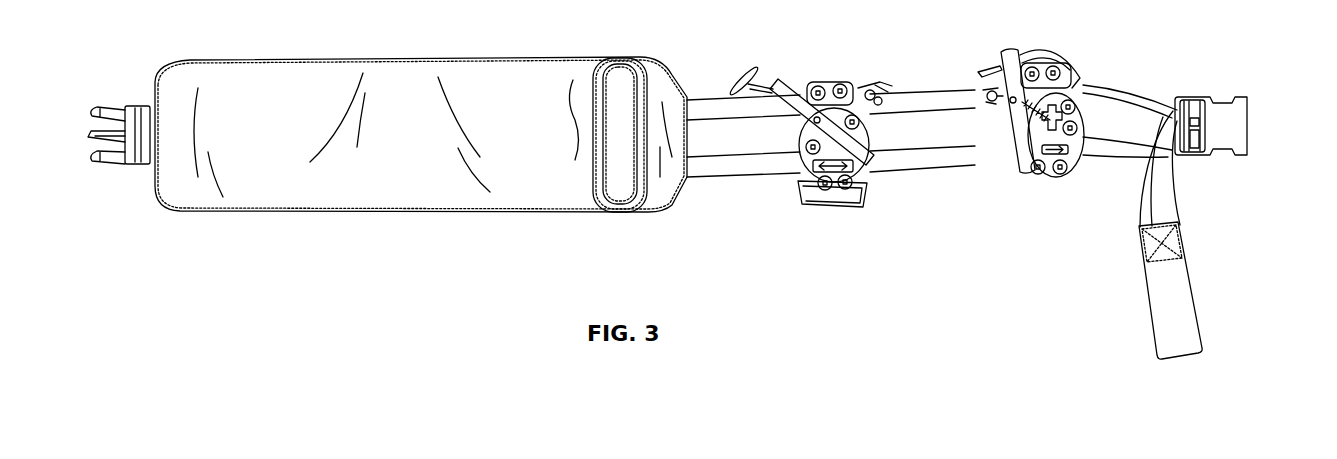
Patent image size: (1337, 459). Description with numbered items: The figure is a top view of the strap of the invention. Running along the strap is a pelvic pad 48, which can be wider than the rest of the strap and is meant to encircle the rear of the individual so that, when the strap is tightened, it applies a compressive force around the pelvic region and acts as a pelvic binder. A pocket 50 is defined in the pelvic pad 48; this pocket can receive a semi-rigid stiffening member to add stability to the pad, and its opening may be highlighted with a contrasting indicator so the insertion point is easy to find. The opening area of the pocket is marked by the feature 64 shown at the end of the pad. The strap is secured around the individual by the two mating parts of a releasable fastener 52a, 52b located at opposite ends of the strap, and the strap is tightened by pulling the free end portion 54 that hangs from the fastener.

The pelvic pad 48 is at (512, 192).
The pocket 50 is at (623, 190).
The reinforced border 64 is at (636, 62).
The releasable fastener 52a is at (1240, 122).
The releasable fastener 52b is at (115, 164).
The end portion 54 is at (1178, 290).